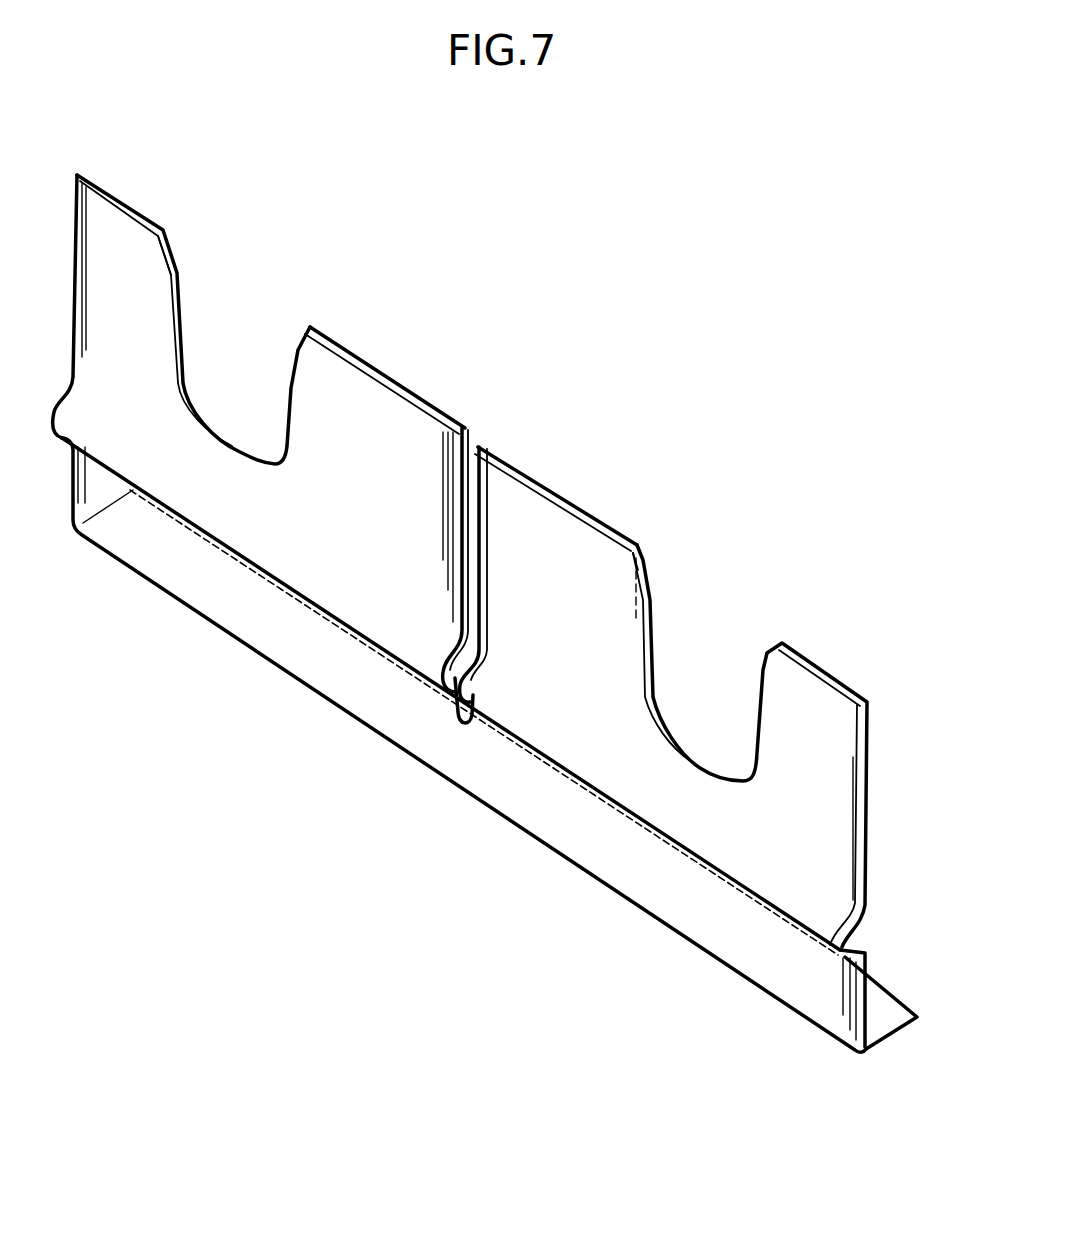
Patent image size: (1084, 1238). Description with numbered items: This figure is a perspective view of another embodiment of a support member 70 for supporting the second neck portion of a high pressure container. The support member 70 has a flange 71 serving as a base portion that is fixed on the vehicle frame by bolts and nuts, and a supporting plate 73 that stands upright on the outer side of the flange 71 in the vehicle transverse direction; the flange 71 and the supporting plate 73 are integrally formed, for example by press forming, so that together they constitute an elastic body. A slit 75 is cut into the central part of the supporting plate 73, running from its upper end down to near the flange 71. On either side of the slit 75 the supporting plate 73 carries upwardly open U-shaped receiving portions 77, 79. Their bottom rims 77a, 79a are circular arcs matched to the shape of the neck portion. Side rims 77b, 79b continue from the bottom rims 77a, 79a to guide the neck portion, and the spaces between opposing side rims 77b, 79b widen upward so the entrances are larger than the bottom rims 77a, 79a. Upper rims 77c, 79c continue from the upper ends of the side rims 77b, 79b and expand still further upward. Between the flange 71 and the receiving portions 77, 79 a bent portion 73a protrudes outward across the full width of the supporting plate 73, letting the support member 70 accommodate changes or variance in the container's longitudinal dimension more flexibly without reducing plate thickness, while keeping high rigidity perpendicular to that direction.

The support member 70 is at (660, 405).
The flange 71 is at (883, 1007).
The supporting plate 73 is at (530, 505).
The bent portion 73a is at (367, 617).
The slit 75 is at (472, 440).
The receiving portion 77 is at (240, 367).
The bottom rim 77a is at (256, 462).
The side rim 77b is at (180, 313).
The upper rim 77c is at (173, 246).
The receiving portion 79 is at (710, 685).
The bottom rim 79a is at (728, 780).
The side rim 79b is at (650, 630).
The upper rim 79c is at (643, 565).